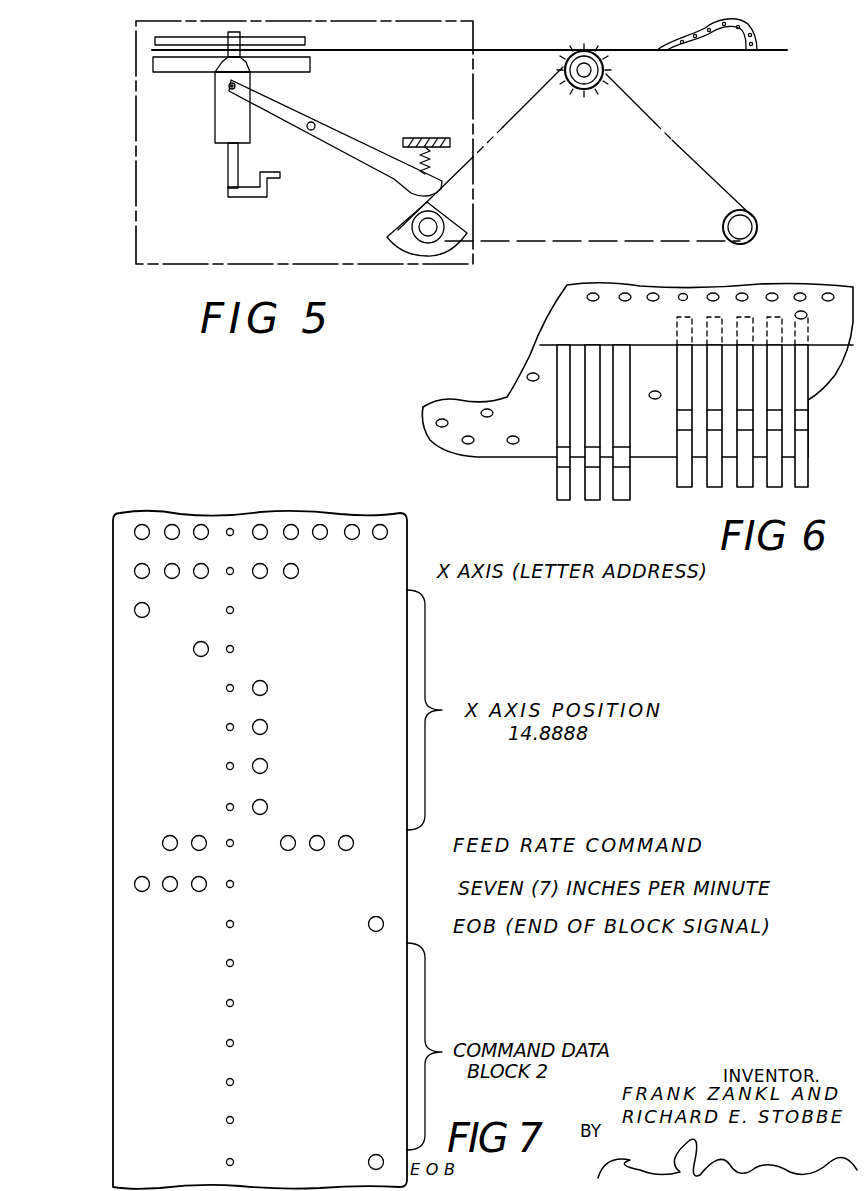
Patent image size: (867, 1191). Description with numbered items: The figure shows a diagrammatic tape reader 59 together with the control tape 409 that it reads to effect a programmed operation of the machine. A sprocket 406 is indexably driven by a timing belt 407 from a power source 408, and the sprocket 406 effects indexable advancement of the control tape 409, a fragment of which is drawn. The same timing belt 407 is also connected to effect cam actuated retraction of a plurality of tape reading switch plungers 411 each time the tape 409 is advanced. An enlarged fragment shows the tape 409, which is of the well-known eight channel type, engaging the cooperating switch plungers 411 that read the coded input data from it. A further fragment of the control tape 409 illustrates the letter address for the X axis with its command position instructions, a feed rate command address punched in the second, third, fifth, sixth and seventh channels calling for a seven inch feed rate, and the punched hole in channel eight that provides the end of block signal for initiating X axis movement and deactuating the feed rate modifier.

In FIG. 5, the tape reader 59 is at (456, 14).
In FIG. 5, the sprocket 406 is at (582, 92).
In FIG. 5, the timing belt 407 is at (703, 160).
In FIG. 5, the power source 408 is at (755, 224).
In FIG. 5, the control tape 409 is at (710, 36).
In FIG. 6, the control tape 409 is at (727, 298).
In FIG. 7, the control tape 409 is at (125, 527).
In FIG. 5, the tape reading switch plungers 411 is at (202, 181).
In FIG. 6, the tape reading switch plungers 411 is at (737, 492).